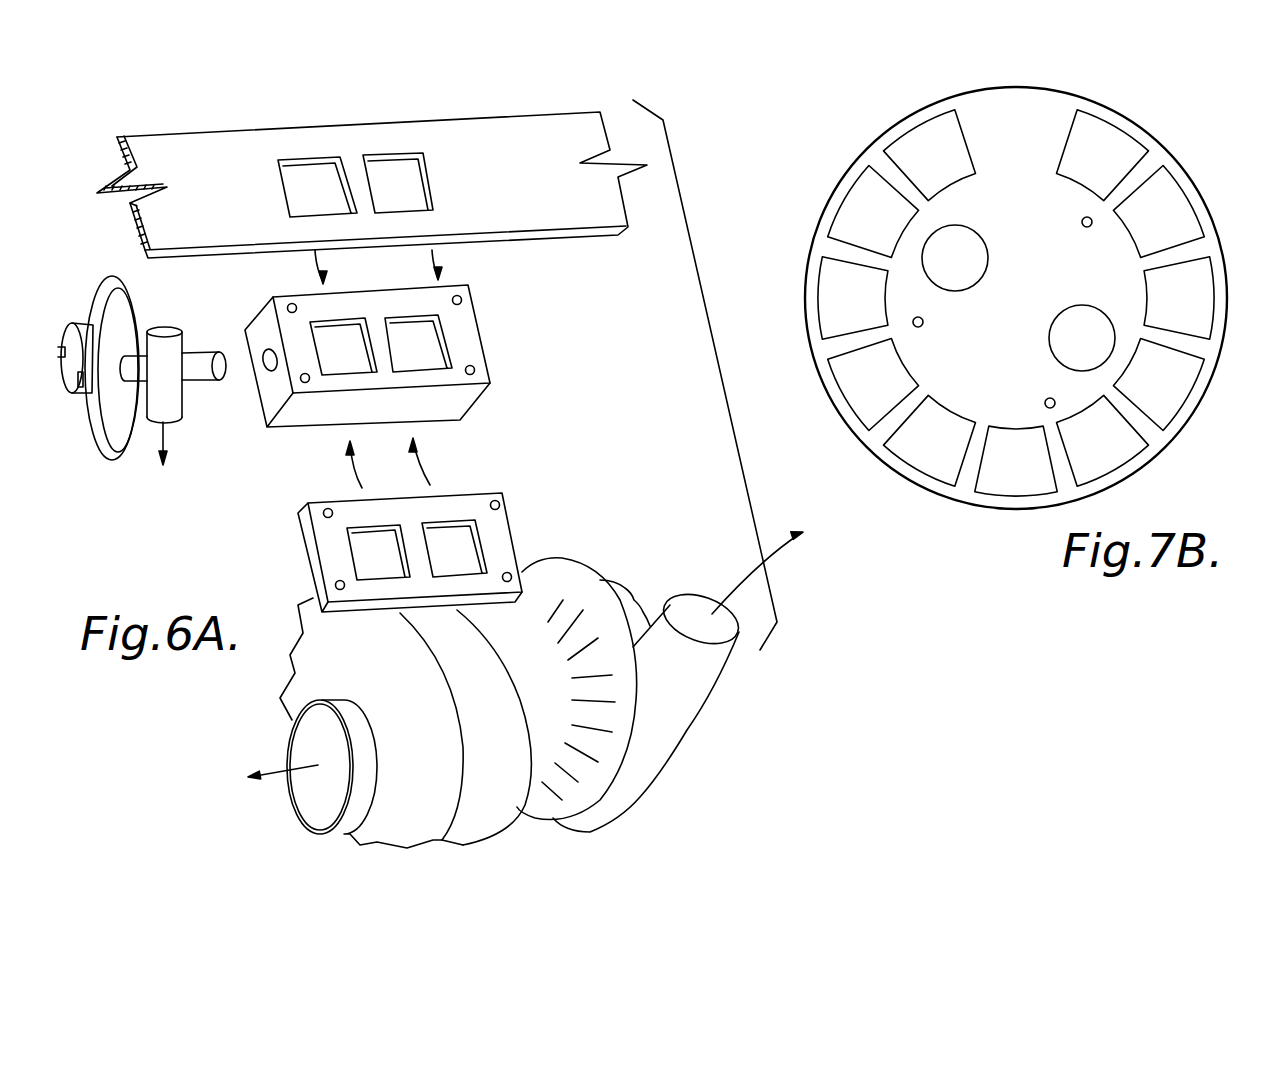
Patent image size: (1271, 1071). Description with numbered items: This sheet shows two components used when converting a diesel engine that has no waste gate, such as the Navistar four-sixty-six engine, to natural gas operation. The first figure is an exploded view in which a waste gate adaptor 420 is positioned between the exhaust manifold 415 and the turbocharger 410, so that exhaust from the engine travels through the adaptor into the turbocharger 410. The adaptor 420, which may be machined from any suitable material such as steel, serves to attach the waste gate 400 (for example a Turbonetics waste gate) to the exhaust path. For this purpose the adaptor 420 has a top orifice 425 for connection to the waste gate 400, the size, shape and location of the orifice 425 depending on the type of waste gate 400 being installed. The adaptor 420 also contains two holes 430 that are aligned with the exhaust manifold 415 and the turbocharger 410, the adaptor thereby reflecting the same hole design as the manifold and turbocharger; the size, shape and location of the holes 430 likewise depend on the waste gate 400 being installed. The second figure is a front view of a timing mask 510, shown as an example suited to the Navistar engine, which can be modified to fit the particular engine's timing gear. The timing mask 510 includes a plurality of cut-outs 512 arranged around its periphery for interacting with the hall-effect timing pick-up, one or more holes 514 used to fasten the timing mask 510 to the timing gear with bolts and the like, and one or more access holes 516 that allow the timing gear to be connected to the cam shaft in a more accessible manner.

In FIG. 6A, the waste gate 400 is at (107, 457).
In FIG. 6A, the turbocharger 410 is at (612, 562).
In FIG. 6A, the exhaust manifold 415 is at (540, 128).
In FIG. 6A, the waste gate adaptor 420 is at (402, 355).
In FIG. 6A, the top orifice 425 is at (264, 371).
In FIG. 6A, the holes 430 is at (420, 338).
In FIG. 7B, the timing mask 510 is at (1010, 302).
In FIG. 7B, the cut-outs 512 is at (967, 168).
In FIG. 7B, the holes 514 is at (1081, 224).
In FIG. 7B, the access holes 516 is at (1065, 321).